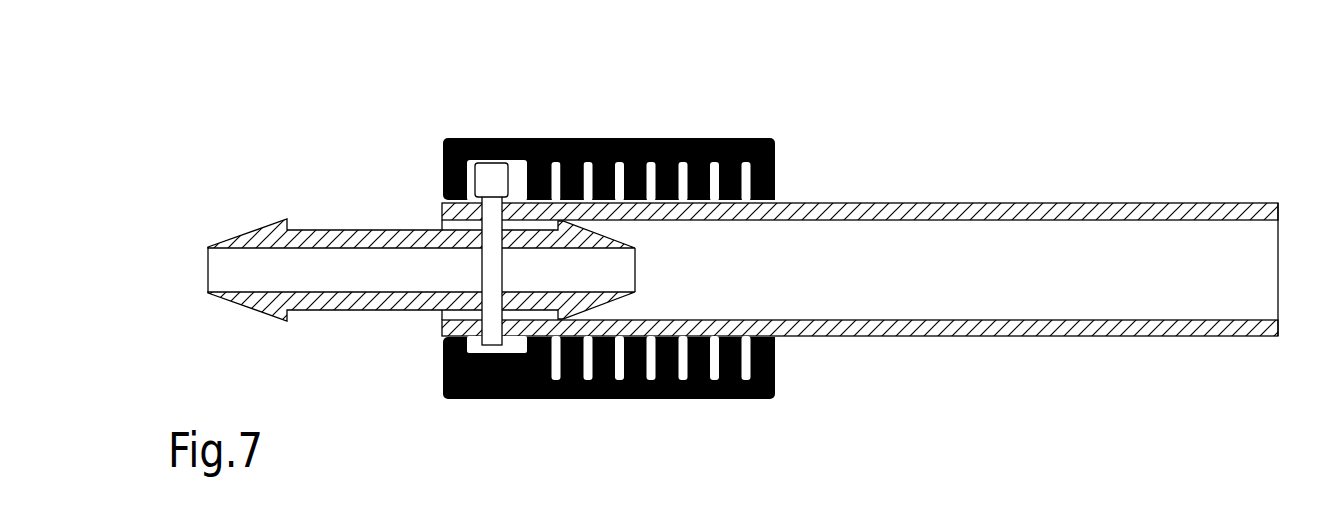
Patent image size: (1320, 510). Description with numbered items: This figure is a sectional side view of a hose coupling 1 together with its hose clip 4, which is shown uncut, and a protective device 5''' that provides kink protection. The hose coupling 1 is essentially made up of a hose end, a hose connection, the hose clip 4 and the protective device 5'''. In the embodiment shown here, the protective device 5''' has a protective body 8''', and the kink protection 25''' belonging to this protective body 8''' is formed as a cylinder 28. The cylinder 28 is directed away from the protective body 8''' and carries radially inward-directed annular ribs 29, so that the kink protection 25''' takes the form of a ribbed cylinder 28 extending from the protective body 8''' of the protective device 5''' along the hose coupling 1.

The hose coupling 1 is at (379, 212).
The hose clip 4 is at (490, 258).
The protective device 5''' is at (599, 121).
The protective body 8''' is at (596, 407).
The kink protection 25''' is at (620, 121).
The cylinder 28 is at (693, 137).
The annular ribs 29 is at (775, 175).